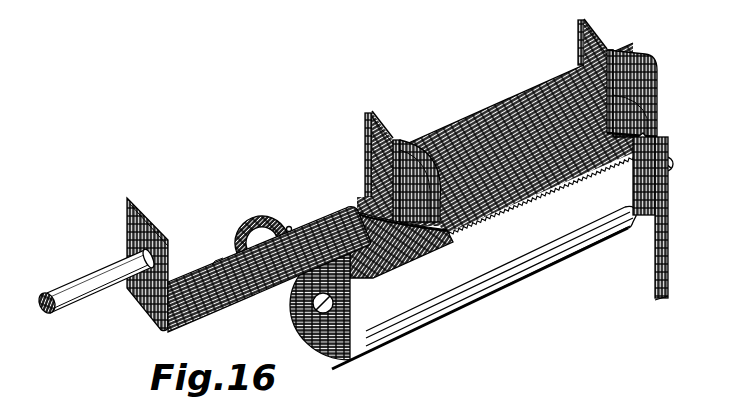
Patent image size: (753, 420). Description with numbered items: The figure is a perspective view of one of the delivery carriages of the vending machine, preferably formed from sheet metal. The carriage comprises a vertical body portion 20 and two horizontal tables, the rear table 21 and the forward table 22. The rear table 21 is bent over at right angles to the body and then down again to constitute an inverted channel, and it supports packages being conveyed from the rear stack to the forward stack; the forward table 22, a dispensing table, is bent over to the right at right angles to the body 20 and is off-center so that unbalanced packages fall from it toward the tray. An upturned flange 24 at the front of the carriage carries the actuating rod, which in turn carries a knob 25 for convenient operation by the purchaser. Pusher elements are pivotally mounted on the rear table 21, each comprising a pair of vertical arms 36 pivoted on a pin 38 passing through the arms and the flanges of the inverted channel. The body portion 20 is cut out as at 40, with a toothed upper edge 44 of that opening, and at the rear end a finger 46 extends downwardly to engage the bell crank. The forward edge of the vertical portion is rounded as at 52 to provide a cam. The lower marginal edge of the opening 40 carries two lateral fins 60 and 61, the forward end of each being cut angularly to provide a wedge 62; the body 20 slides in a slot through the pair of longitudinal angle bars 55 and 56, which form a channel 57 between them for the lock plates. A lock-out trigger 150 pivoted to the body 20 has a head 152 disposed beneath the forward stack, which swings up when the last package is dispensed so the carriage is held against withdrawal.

The vertical body portion 20 is at (330, 345).
The rear table 21 is at (514, 139).
The forward table 22 is at (202, 290).
The upturned flange 24 is at (148, 232).
The knob 25 is at (82, 281).
The vertical arm 36 is at (402, 196).
The pin 38 is at (433, 196).
The cut-out opening 40 is at (517, 250).
The saw teeth 44 is at (560, 195).
The finger 46 is at (665, 258).
The rounded forward edge 52 is at (308, 352).
The longitudinal angle bar 55 is at (362, 119).
The longitudinal angle bar 56 is at (645, 49).
The longitudinal channel 57 is at (389, 107).
The lateral fin 60 is at (469, 312).
The lateral fin 61 is at (441, 303).
The wedge 62 is at (367, 362).
The lock-out trigger 150 is at (289, 226).
The head 152 is at (250, 223).